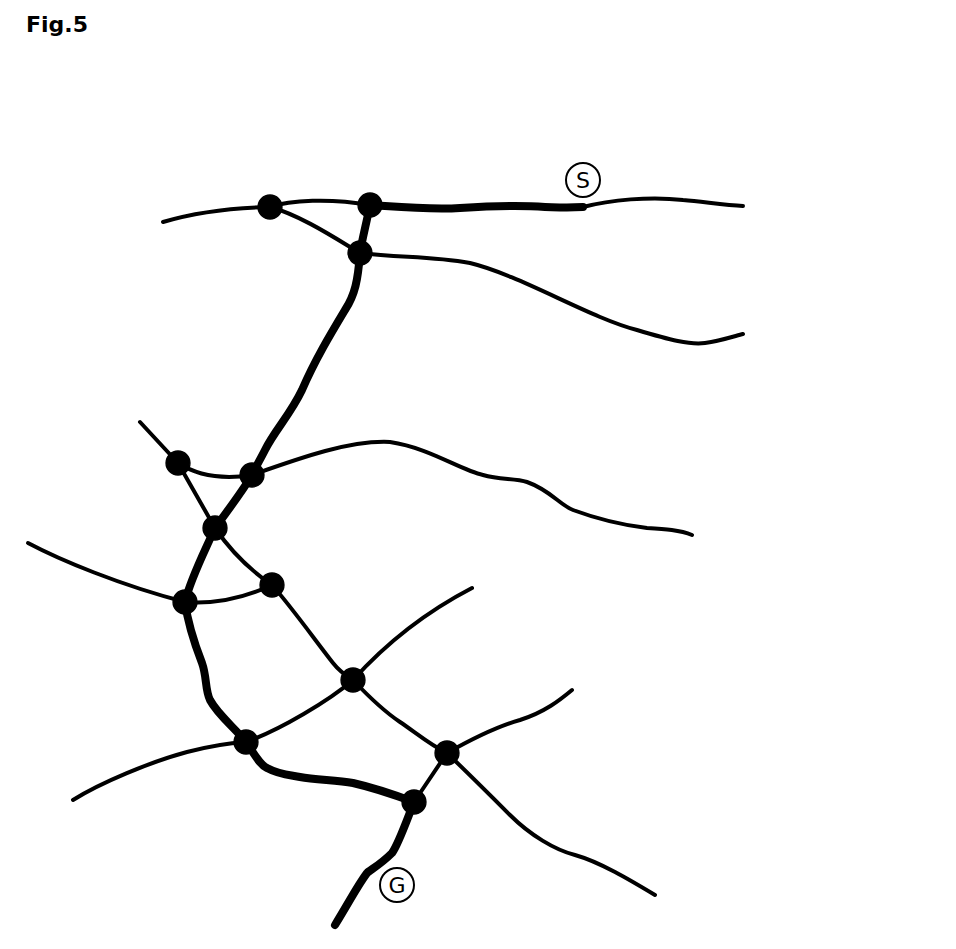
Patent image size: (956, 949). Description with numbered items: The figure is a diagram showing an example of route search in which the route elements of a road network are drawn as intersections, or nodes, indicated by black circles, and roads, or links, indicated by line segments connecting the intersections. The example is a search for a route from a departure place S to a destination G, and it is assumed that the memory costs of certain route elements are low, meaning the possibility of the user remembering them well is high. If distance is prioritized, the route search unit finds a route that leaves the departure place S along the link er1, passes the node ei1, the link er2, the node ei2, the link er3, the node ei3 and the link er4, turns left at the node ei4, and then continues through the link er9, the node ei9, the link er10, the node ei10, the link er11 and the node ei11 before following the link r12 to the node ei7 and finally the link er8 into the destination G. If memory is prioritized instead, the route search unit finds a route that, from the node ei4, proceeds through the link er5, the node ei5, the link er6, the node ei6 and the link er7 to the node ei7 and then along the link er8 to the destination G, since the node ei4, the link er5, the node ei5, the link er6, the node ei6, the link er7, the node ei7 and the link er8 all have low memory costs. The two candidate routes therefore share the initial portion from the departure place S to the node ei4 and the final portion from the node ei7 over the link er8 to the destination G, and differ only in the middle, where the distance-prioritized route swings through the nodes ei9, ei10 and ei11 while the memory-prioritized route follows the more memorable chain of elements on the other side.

The node ei1 is at (374, 193).
The node ei2 is at (352, 265).
The node ei3 is at (240, 464).
The node ei4 is at (203, 527).
The node ei5 is at (176, 613).
The node ei6 is at (238, 758).
The node ei7 is at (398, 806).
The node ei9 is at (270, 600).
The node ei10 is at (340, 688).
The node ei11 is at (432, 760).
The link er1 is at (453, 203).
The link er2 is at (367, 232).
The link er3 is at (310, 388).
The link er4 is at (243, 503).
The link er5 is at (188, 563).
The link er6 is at (205, 693).
The link er7 is at (320, 787).
The link er8 is at (360, 905).
The link er9 is at (240, 550).
The link er10 is at (312, 624).
The link er11 is at (402, 718).
The link r12 is at (434, 785).